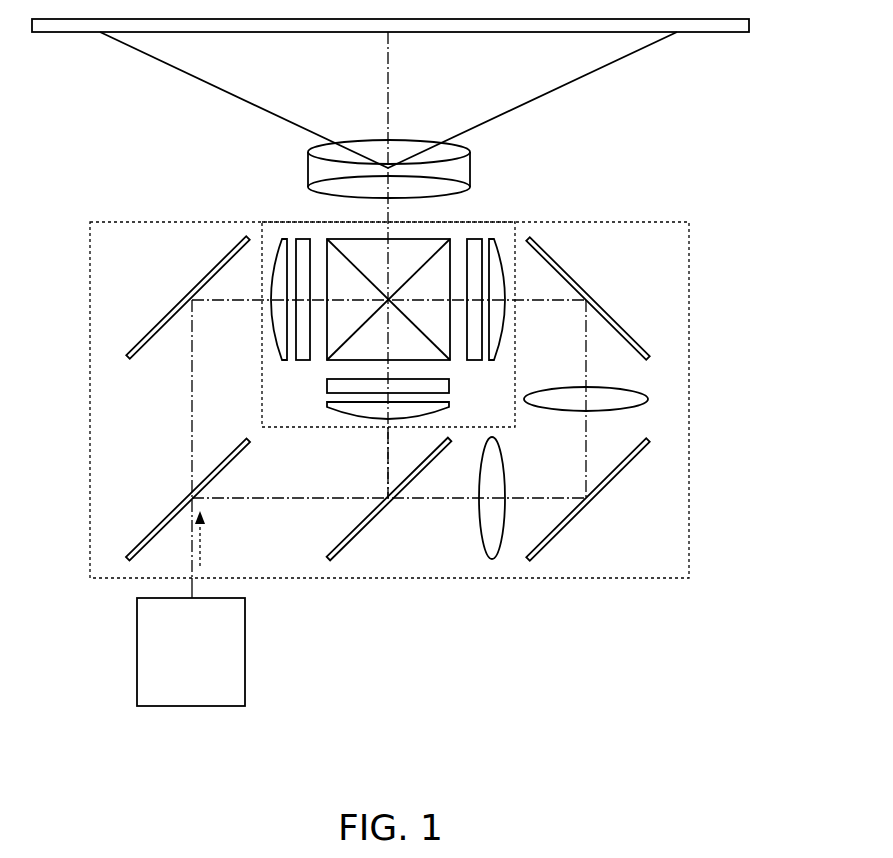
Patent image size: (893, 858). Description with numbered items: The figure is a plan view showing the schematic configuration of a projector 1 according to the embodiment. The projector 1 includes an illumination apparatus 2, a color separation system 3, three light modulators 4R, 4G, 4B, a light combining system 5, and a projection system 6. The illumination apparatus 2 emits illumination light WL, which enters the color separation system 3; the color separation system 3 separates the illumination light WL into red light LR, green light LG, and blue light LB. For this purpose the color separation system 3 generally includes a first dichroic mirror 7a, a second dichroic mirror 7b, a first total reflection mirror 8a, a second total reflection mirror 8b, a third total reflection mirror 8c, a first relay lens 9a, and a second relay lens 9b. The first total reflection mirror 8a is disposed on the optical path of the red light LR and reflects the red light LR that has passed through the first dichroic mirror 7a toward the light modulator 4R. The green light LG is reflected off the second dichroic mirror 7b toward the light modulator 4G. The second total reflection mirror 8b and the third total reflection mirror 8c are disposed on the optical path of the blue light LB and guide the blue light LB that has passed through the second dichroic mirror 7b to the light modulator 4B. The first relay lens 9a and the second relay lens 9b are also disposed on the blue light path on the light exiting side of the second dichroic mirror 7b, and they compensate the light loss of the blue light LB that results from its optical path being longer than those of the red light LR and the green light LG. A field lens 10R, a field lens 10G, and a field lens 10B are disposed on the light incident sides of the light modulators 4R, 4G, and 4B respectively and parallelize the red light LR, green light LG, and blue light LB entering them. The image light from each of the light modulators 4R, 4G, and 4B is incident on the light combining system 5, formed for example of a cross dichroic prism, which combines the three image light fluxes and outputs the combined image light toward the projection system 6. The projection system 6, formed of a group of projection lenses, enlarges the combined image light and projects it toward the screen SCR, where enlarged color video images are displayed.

The projector 1 is at (698, 199).
The illumination apparatus 2 is at (246, 650).
The color separation system 3 is at (90, 348).
The light modulator 4R is at (303, 239).
The light modulator 4G is at (330, 387).
The light modulator 4B is at (474, 239).
The light combining system 5 is at (410, 253).
The projection system 6 is at (372, 150).
The first dichroic mirror 7a is at (158, 527).
The second dichroic mirror 7b is at (368, 530).
The first total reflection mirror 8a is at (168, 315).
The second total reflection mirror 8b is at (612, 484).
The third total reflection mirror 8c is at (612, 317).
The first relay lens 9a is at (478, 518).
The second relay lens 9b is at (640, 392).
The field lens 10R is at (280, 239).
The field lens 10G is at (333, 408).
The field lens 10B is at (497, 238).
The screen SCR is at (718, 34).
The red light LR is at (190, 420).
The green light LG is at (386, 462).
The blue light LB is at (584, 462).
The illumination light WL is at (202, 545).